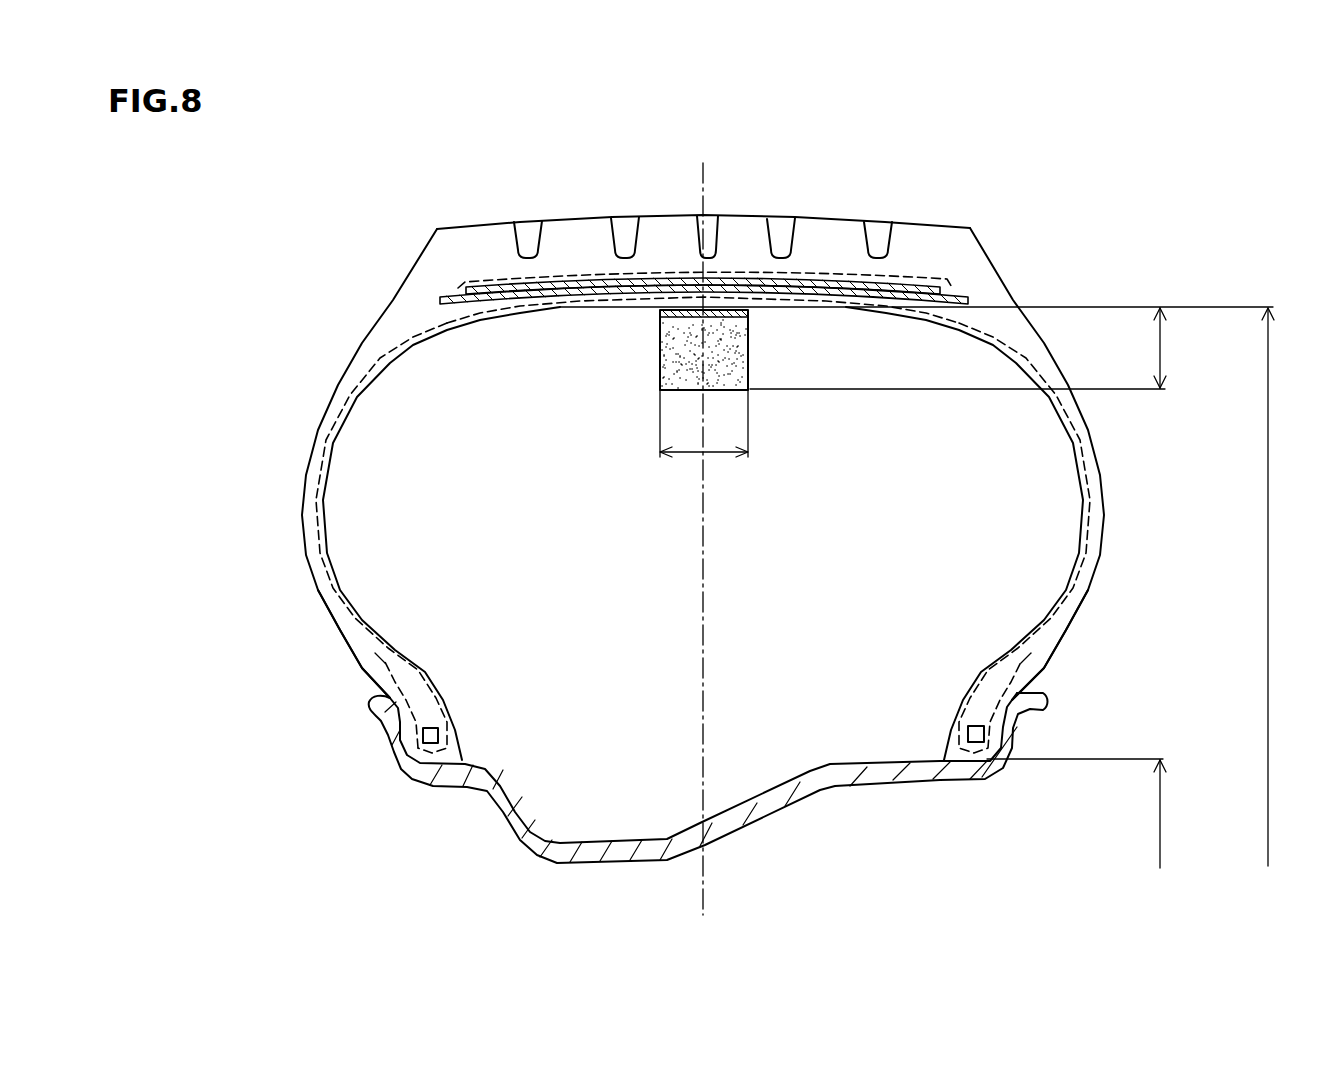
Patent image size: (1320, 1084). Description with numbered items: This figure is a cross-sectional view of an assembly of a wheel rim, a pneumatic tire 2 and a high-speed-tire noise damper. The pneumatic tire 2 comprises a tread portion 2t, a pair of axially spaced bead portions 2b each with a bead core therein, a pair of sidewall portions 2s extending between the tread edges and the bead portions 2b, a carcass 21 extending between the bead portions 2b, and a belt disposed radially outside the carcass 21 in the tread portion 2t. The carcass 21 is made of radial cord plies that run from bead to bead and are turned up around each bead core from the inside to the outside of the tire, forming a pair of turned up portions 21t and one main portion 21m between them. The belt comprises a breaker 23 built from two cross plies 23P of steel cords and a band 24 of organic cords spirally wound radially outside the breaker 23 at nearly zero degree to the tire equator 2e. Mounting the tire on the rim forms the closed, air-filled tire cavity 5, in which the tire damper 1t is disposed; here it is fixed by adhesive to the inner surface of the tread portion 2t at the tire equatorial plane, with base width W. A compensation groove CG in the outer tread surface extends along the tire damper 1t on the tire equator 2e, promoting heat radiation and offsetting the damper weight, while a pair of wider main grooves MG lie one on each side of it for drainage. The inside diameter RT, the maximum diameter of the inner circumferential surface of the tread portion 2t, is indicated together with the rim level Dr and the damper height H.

The pneumatic tire 2 is at (1108, 275).
The tread portion 2t is at (939, 228).
The sidewall portion 2s is at (305, 512).
The bead portion 2b is at (403, 752).
The tire equator 2e is at (712, 905).
The tire cavity 5 is at (572, 583).
The carcass 21 is at (178, 570).
The main portion 21m is at (335, 572).
The turned up portion 21t is at (372, 666).
The breaker 23 is at (428, 737).
The cross ply 23P is at (470, 286).
The band 24 is at (498, 272).
The tire damper 1t is at (748, 362).
The main groove MG is at (622, 245).
The compensation groove CG is at (708, 235).
The height of component H is at (916, 348).
The base width W is at (718, 452).
The rim diameter level Dr is at (1080, 828).
The inside diameter RT is at (1271, 603).